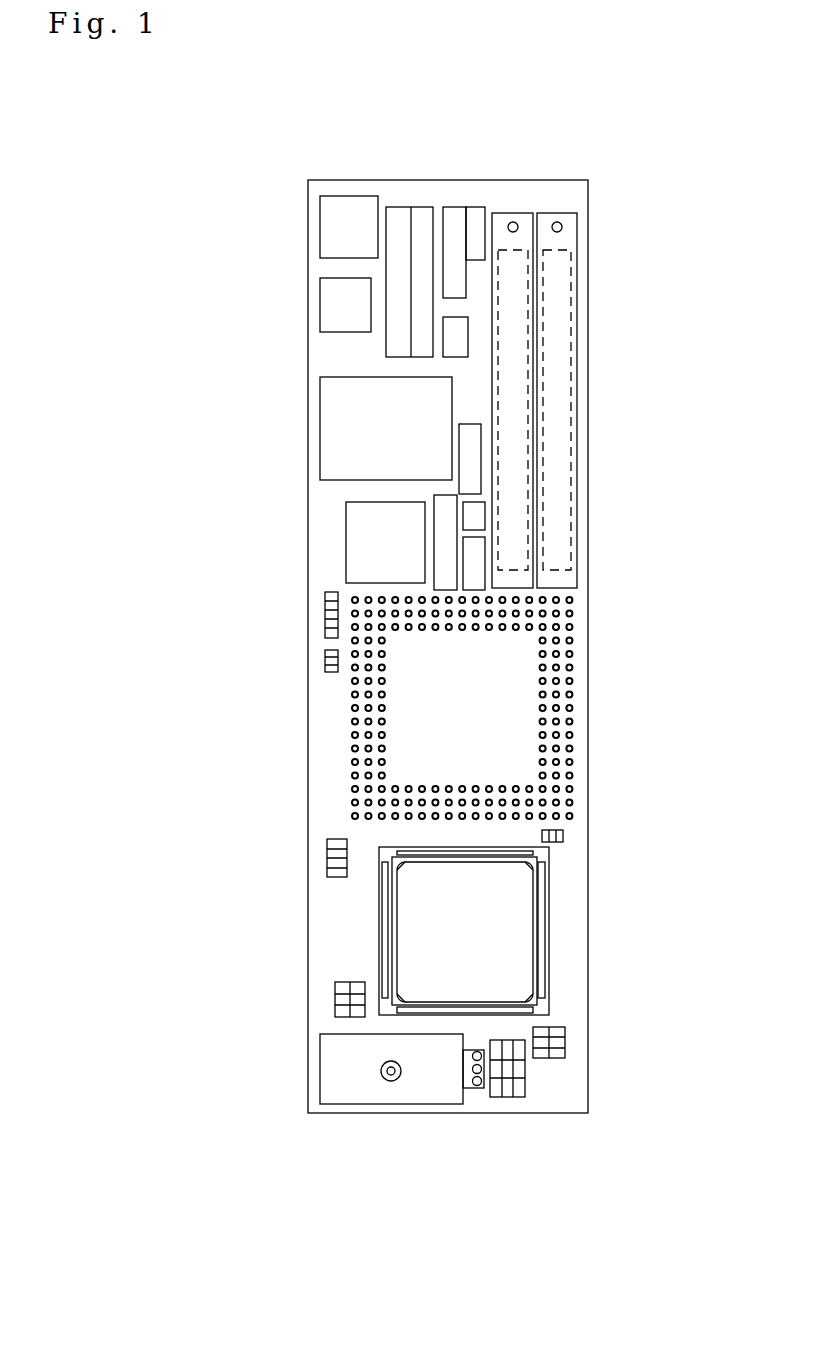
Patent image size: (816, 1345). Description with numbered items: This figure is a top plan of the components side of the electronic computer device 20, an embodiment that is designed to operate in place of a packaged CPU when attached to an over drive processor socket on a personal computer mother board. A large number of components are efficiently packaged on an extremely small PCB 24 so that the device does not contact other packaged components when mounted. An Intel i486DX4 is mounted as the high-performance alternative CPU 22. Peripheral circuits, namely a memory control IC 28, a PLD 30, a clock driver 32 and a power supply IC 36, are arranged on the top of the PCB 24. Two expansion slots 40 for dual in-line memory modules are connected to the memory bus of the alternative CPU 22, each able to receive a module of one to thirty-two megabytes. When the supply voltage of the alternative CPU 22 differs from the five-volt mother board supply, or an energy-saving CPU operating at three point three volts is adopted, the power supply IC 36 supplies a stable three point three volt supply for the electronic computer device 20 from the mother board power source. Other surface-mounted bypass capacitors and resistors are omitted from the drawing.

The electronic computer device 20 is at (630, 660).
The alternative CPU 22 is at (517, 937).
The PCB 24 is at (573, 855).
The memory control IC 28 is at (327, 420).
The PLD 30 is at (353, 550).
The clock driver 32 is at (477, 515).
The power supply IC 36 is at (365, 1096).
The expansion slots for DIMMs 40 is at (515, 212).